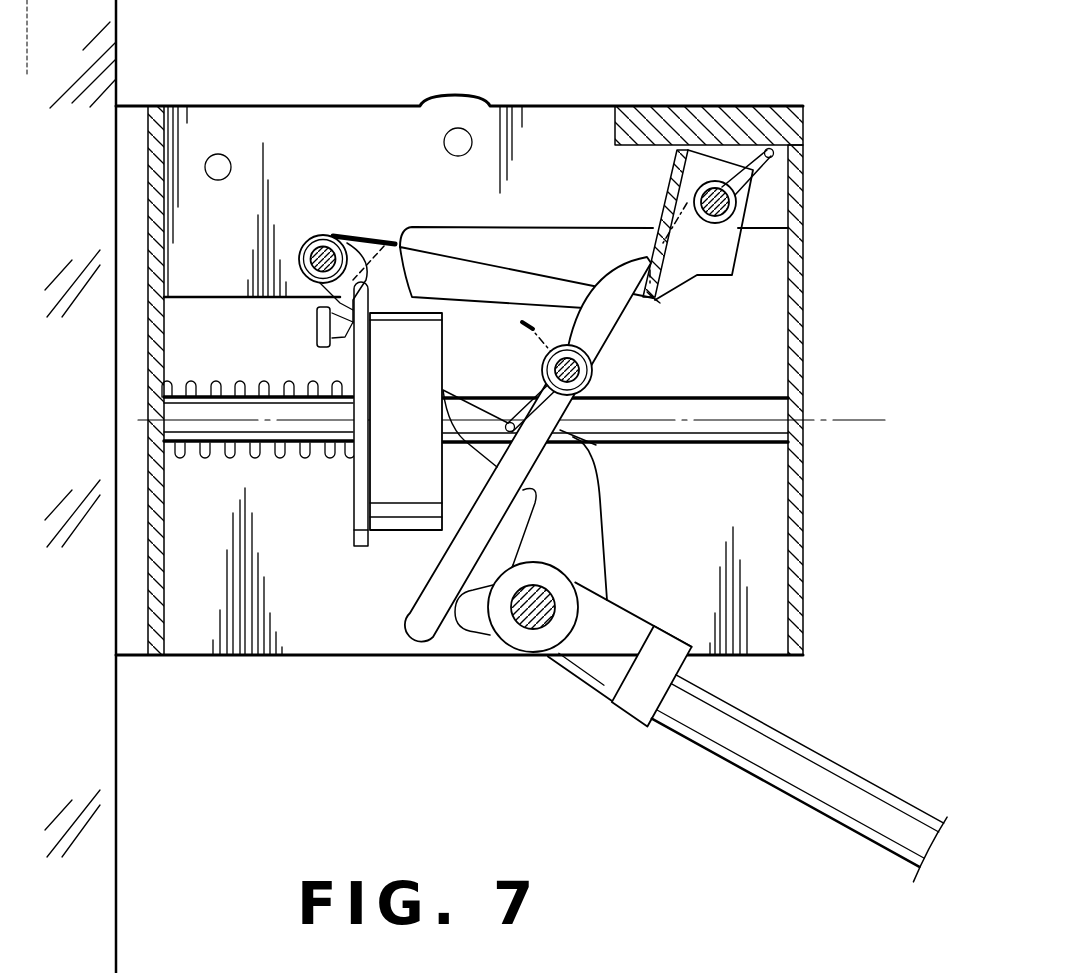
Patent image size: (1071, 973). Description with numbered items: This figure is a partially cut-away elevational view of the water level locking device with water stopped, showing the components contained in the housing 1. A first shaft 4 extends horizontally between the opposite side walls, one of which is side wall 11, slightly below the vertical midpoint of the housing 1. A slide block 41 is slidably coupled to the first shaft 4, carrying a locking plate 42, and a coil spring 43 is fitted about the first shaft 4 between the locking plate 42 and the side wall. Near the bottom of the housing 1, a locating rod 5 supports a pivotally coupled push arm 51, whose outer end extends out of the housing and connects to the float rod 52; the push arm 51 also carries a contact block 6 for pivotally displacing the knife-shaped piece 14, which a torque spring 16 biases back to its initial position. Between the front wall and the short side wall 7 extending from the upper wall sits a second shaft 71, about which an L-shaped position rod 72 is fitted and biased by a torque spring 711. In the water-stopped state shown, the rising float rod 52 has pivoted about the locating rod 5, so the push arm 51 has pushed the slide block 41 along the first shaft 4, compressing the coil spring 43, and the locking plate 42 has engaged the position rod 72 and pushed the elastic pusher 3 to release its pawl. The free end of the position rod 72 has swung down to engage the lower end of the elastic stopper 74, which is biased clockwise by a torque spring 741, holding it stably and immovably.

The housing 1 is at (828, 371).
The elastic pusher 3 is at (310, 310).
The first shaft 4 is at (762, 446).
The locating rod 5 is at (533, 630).
The contact block 6 is at (475, 632).
The short side wall 7 is at (336, 122).
The side wall 11 is at (800, 327).
The knife-shaped piece 14 is at (597, 332).
The torque spring 16 is at (596, 445).
The slide block 41 is at (405, 513).
The locking plate 42 is at (358, 506).
The coil spring 43 is at (230, 462).
The push arm 51 is at (583, 560).
The float rod 52 is at (735, 740).
The second shaft 71 is at (318, 250).
The position rod 72 is at (495, 276).
The elastic stopper 74 is at (720, 245).
The torque spring 711 is at (363, 250).
The torque spring 741 is at (773, 152).